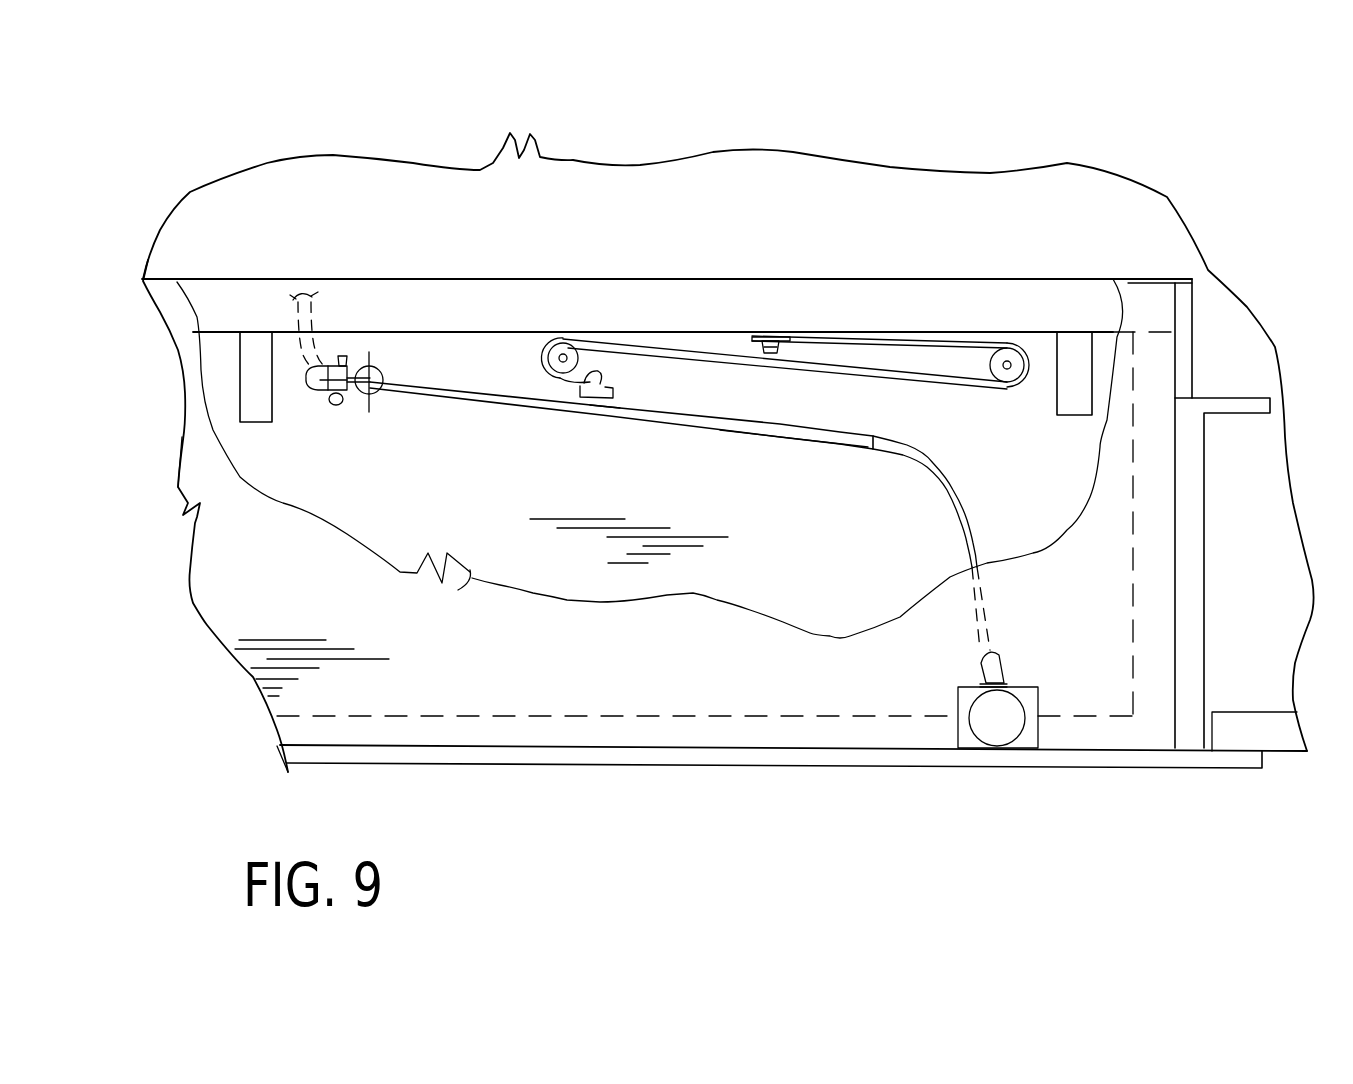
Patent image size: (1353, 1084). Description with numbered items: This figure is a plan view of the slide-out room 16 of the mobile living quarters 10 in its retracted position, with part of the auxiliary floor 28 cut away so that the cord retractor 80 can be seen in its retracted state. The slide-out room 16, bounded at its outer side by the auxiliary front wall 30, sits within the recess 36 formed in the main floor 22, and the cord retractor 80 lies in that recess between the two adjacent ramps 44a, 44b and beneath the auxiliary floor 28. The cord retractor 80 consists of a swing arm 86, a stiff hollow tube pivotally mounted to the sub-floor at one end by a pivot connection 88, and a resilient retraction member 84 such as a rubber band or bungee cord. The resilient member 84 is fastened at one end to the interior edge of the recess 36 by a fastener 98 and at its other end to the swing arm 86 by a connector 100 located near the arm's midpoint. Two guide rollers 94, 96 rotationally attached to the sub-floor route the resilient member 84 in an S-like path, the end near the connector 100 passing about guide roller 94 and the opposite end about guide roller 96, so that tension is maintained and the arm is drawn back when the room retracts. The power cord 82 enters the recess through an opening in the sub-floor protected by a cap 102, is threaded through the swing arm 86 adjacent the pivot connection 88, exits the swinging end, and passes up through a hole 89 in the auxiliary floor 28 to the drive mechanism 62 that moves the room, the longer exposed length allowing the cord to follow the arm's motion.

The mobile living quarters 10 is at (1302, 754).
The slide-out room 16 is at (279, 742).
The main floor 22 is at (1155, 228).
The auxiliary floor 28 is at (217, 590).
The auxiliary front wall 30 is at (650, 765).
The recess 36 is at (270, 463).
The ramp 44a is at (253, 387).
The ramp 44b is at (1073, 393).
The drive mechanism 62 is at (1028, 744).
The cord retractor 80 is at (594, 412).
The power cord 82 is at (962, 517).
The resilient retraction member 84 is at (920, 383).
The swing arm 86 is at (487, 410).
The pivot connection 88 is at (373, 367).
The hole 89 is at (1000, 657).
The guide roller 94 is at (557, 347).
The guide roller 96 is at (1017, 353).
The fastener 98 is at (770, 335).
The connector 100 is at (600, 378).
The cap 102 is at (330, 365).